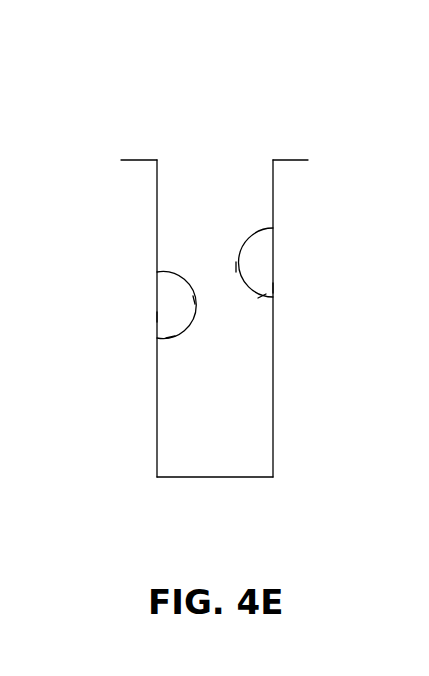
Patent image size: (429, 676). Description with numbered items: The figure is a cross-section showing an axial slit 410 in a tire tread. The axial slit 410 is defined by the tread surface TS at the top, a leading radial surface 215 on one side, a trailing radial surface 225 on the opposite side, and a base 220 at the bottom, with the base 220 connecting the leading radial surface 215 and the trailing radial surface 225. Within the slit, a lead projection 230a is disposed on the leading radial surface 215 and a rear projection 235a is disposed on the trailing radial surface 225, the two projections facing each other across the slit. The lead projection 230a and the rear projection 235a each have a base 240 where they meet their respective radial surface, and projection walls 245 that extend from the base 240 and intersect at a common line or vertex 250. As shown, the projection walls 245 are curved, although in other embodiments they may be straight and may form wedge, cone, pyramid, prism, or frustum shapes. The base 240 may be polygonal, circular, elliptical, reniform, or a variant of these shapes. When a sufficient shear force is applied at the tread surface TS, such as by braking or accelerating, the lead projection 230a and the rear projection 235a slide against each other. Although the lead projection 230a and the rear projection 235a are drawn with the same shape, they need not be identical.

The axial slit 410 is at (145, 56).
The tread surface TS is at (142, 158).
The leading radial surface 215 is at (275, 418).
The base 220 is at (215, 480).
The trailing radial surface 225 is at (155, 455).
The lead projection 230a is at (258, 268).
The rear projection 235a is at (170, 300).
The base 240 is at (157, 317).
The projection walls 245 is at (263, 297).
The common line or vertex 250 is at (194, 300).